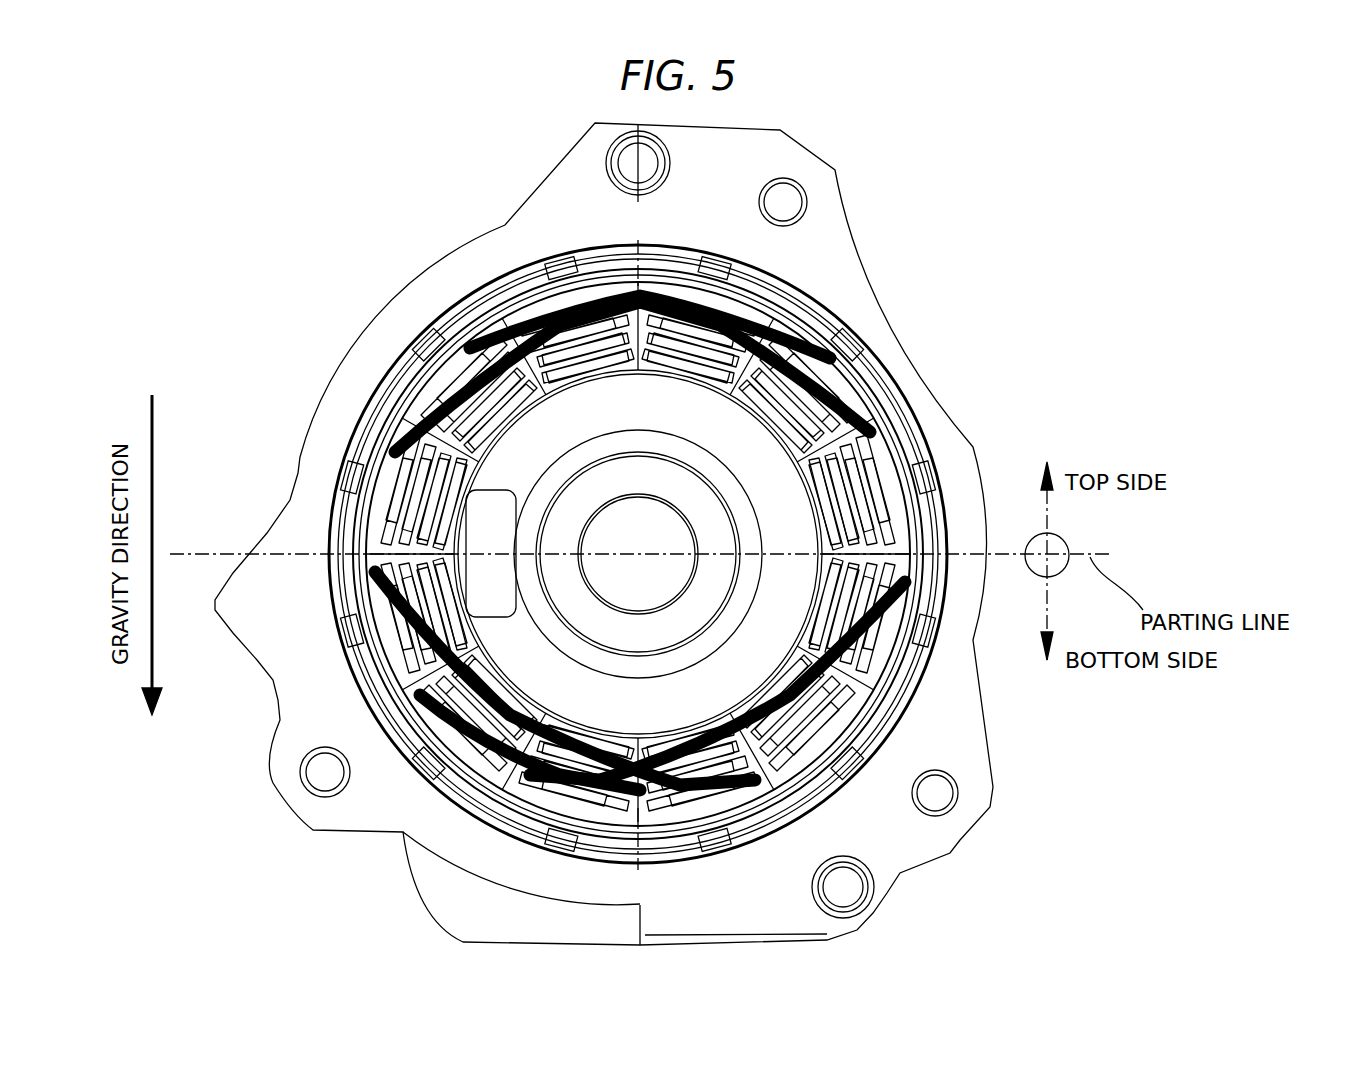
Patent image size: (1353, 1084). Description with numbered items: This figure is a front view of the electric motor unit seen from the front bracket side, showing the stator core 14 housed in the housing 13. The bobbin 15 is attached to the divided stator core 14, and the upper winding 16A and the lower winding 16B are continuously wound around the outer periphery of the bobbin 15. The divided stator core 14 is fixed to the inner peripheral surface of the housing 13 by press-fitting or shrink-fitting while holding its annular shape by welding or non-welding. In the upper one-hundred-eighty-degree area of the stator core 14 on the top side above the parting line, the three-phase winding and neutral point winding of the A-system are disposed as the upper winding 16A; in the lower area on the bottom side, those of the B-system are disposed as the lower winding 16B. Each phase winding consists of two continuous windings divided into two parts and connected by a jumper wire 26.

The housing 13 is at (323, 468).
The stator core 14 is at (460, 315).
The bobbin 15 is at (913, 503).
The upper winding 16A is at (922, 424).
The lower winding 16B is at (893, 640).
The jumper wire 26 is at (860, 345).